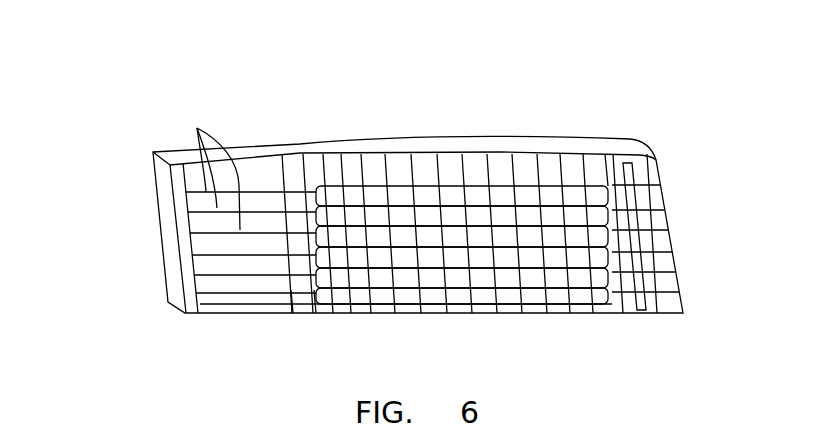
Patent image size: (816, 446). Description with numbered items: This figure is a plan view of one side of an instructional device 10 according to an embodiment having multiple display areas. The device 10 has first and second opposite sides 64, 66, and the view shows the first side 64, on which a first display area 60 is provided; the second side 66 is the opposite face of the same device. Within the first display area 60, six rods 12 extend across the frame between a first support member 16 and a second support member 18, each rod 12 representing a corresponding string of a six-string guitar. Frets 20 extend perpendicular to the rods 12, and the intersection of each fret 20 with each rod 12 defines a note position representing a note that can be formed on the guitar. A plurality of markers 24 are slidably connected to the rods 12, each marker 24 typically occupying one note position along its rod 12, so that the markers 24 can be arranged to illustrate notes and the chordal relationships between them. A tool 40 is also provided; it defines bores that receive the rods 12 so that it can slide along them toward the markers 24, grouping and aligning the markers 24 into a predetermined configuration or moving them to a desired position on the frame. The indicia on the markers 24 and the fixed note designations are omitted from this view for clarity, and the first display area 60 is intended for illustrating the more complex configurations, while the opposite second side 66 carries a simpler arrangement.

The instructional device 10 is at (714, 102).
The rods 12 is at (197, 128).
The first support member 16 is at (662, 187).
The second support member 18 is at (187, 274).
The frets 20 is at (454, 167).
The markers 24 is at (334, 305).
The tool 40 is at (643, 310).
The first display area 60 is at (378, 165).
The first side 64 is at (262, 166).
The second side 66 is at (155, 203).